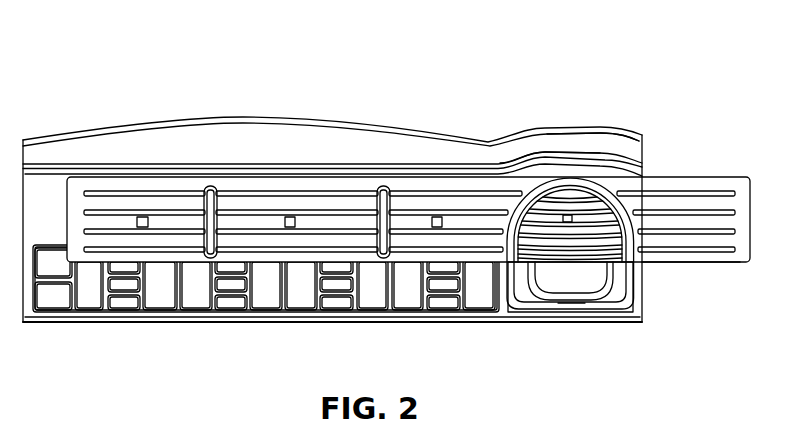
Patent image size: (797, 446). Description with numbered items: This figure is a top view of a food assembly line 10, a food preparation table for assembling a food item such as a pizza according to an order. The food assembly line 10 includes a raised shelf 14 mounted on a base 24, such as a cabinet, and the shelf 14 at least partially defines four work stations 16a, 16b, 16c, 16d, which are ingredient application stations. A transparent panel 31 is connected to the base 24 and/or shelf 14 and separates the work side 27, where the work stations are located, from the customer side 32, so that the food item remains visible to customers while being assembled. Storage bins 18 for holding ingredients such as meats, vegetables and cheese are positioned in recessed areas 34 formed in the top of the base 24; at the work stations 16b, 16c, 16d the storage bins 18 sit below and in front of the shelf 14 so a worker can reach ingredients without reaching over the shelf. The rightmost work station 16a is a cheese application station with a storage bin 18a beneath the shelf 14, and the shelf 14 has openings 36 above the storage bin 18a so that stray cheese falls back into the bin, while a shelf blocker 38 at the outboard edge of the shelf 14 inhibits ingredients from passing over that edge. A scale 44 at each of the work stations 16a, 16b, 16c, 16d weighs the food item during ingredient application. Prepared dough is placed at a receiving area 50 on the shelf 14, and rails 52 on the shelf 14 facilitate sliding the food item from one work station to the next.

The food assembly line 10 is at (395, 206).
The shelf 14 is at (414, 224).
The work station 16a is at (614, 158).
The work station 16b is at (455, 178).
The work station 16c is at (307, 178).
The work station 16d is at (154, 178).
The storage bins 18 is at (266, 305).
The storage bin 18a is at (600, 260).
The base 24 is at (643, 318).
The work side 27 is at (434, 357).
The transparent panel 31 is at (375, 125).
The customer side 32 is at (505, 77).
The recessed areas 34 is at (150, 303).
The openings 36 is at (628, 224).
The shelf blocker 38 is at (552, 152).
The scale 44 is at (142, 216).
The receiving area 50 is at (696, 281).
The rails 52 is at (265, 250).